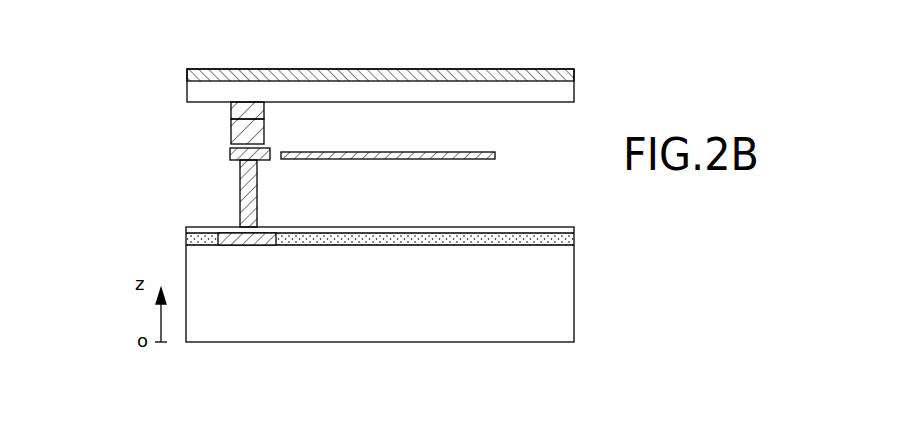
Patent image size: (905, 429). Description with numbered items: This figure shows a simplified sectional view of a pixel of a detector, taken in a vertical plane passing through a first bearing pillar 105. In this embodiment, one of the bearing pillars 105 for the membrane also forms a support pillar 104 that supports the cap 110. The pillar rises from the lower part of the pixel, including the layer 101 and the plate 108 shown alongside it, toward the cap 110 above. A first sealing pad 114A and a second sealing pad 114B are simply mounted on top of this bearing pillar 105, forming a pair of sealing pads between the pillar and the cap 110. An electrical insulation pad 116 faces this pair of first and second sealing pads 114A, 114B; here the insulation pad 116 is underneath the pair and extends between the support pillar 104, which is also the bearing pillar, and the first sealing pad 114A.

The substrate 101 is at (566, 290).
The support pillar 104 is at (242, 190).
The bearing pillar 105 is at (181, 247).
The movable electrode plate 108 is at (441, 159).
The cap 110 is at (565, 90).
The first sealing pad 114A is at (236, 128).
The second sealing pad 114B is at (236, 113).
The electrical insulation pad 116 is at (234, 148).